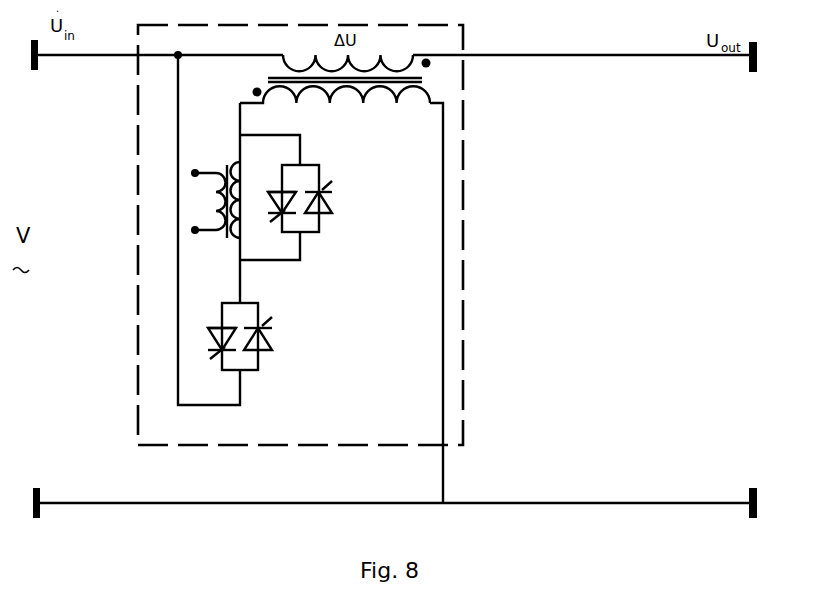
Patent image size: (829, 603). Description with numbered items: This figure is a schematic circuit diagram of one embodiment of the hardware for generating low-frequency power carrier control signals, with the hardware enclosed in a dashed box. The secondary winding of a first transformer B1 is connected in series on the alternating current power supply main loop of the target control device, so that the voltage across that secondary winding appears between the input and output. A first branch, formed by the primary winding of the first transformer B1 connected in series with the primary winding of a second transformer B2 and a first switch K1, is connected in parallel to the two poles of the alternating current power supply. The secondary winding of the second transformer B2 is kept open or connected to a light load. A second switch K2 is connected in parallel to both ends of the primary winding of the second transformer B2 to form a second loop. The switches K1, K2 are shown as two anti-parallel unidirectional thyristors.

The first transformer B1 is at (334, 79).
The second transformer B2 is at (215, 192).
The first switch K1 is at (254, 336).
The second switch K2 is at (299, 197).